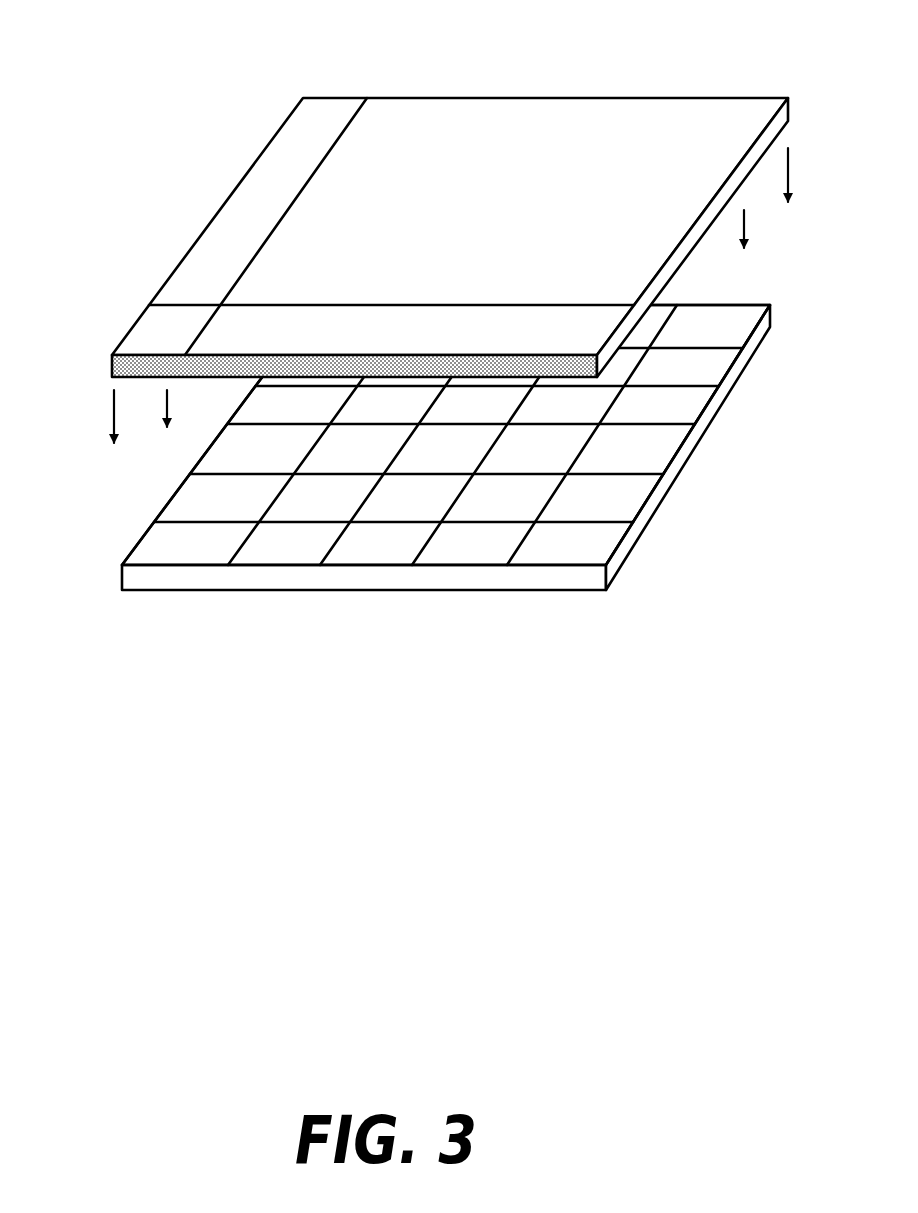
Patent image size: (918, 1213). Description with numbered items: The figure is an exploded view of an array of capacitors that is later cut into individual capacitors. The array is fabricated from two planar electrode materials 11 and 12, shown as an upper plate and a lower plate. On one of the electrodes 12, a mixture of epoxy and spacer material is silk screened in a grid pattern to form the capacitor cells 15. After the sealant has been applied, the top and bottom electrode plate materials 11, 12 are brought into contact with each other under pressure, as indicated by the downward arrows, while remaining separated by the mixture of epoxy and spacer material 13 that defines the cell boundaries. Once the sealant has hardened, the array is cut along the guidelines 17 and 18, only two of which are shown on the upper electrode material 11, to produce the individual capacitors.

The planar electrode material 11 is at (577, 120).
The planar electrode material 12 is at (208, 594).
The mixture of epoxy and spacer material 13 is at (600, 475).
The capacitor cells 15 is at (185, 545).
The guideline 17 is at (285, 213).
The guideline 18 is at (185, 303).